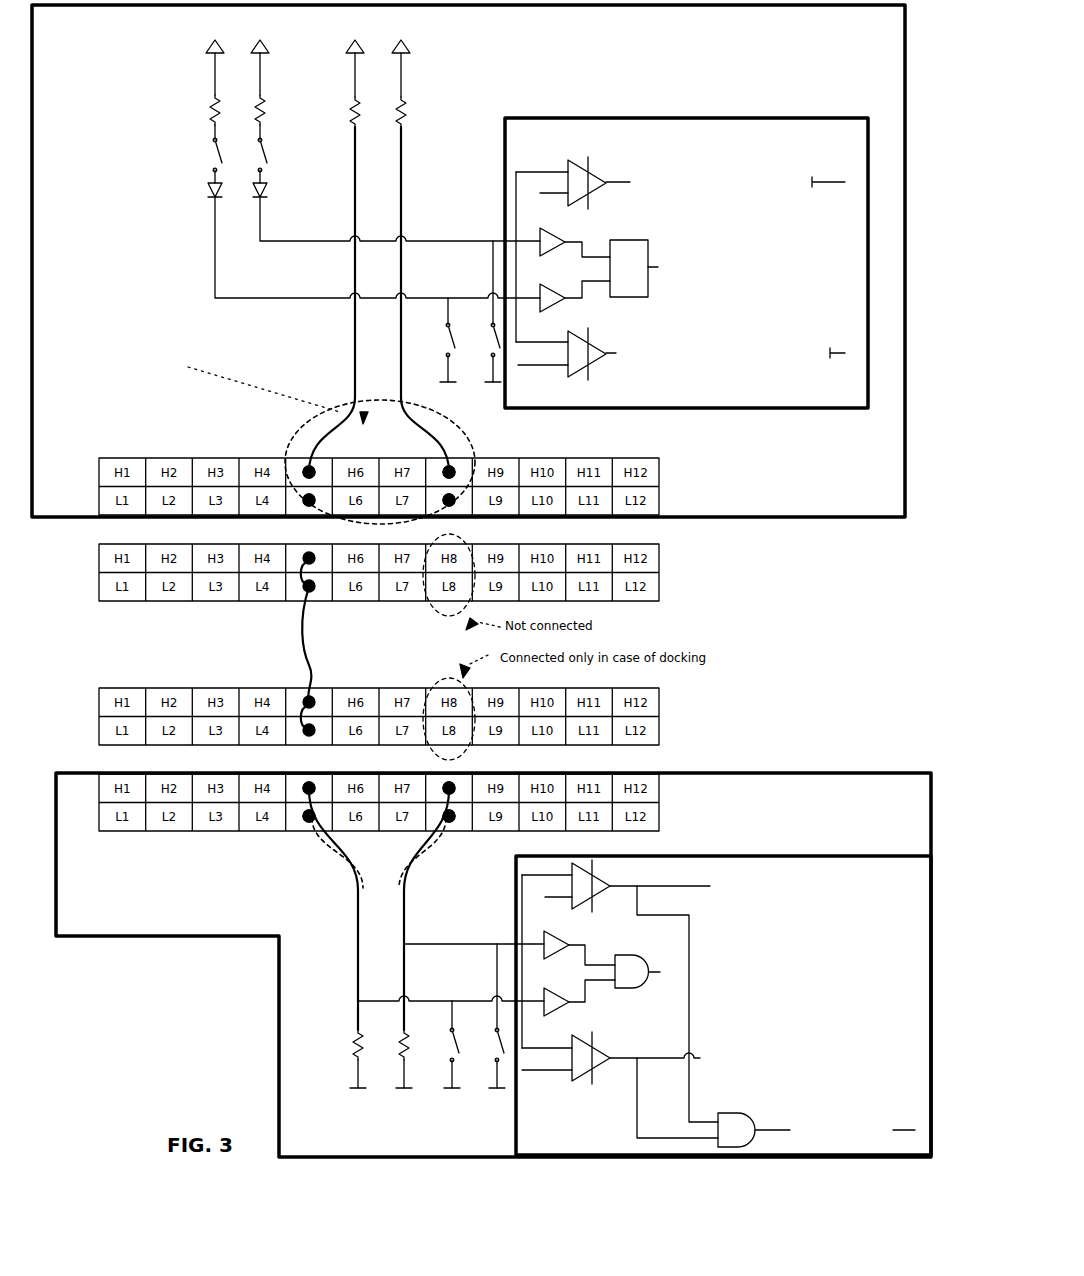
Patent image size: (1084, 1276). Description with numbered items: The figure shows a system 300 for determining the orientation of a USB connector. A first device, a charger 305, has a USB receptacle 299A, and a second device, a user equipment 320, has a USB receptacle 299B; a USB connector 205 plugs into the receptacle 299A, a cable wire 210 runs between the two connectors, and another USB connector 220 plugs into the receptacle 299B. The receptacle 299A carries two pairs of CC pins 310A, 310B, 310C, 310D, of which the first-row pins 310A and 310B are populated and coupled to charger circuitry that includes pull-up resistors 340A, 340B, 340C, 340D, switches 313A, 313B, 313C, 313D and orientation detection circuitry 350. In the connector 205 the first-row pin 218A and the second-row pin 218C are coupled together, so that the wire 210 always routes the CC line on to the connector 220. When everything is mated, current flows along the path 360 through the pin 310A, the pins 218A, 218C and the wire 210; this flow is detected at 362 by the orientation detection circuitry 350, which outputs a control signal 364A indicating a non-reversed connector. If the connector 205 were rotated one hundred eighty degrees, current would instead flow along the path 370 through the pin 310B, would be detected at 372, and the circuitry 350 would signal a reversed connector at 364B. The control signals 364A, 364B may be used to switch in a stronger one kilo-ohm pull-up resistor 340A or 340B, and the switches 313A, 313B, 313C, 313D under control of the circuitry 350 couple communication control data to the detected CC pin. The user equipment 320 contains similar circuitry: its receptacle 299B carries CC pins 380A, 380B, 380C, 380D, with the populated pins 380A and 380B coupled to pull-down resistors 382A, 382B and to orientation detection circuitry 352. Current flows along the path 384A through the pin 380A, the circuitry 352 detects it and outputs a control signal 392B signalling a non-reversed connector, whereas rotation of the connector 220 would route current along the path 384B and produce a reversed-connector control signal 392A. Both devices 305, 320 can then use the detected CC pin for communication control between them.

The system 300 is at (481, 581).
The charger 305 is at (468, 264).
The user equipment 320 is at (494, 951).
The orientation detection circuitry 350 is at (686, 263).
The orientation detection circuitry 352 is at (724, 1005).
The pull-up resistor 340A is at (205, 62).
The pull-up resistor 340B is at (254, 62).
The pull-up resistor 340C is at (350, 72).
The pull-up resistor 340D is at (393, 58).
The switch 313A is at (213, 152).
The switch 313B is at (264, 152).
The switch 313C is at (445, 340).
The switch 313D is at (497, 354).
The CC current path 360 is at (332, 312).
The CC current path 370 is at (388, 318).
The detection point 362 is at (352, 300).
The detection point 372 is at (395, 240).
The control signal 364A is at (712, 338).
The control signal 364B is at (730, 200).
The CC1 pin 310A is at (338, 448).
The CC2 pin 310B is at (436, 456).
The CC pin 310C is at (298, 498).
The CC pin 310D is at (495, 490).
The USB receptacle 299A is at (656, 458).
The USB receptacle 299B is at (650, 773).
The USB connector 205 is at (662, 575).
The USB connector 220 is at (662, 720).
The CC1 pin 218A is at (300, 562).
The CC1 pin 218C is at (302, 590).
The wire 210 is at (312, 655).
The CC1 pin 380A is at (300, 790).
The CC2 pin 380B is at (440, 797).
The CC pin of mobile terminal 380C is at (298, 818).
The CC pin of mobile terminal 380D is at (468, 820).
The CC current path 384A is at (342, 918).
The CC current path 384B is at (397, 918).
The pull-down resistor 382A is at (357, 1018).
The pull-down resistor 382B is at (404, 1073).
The control signal 392A is at (697, 892).
The control signal 392B is at (700, 1050).